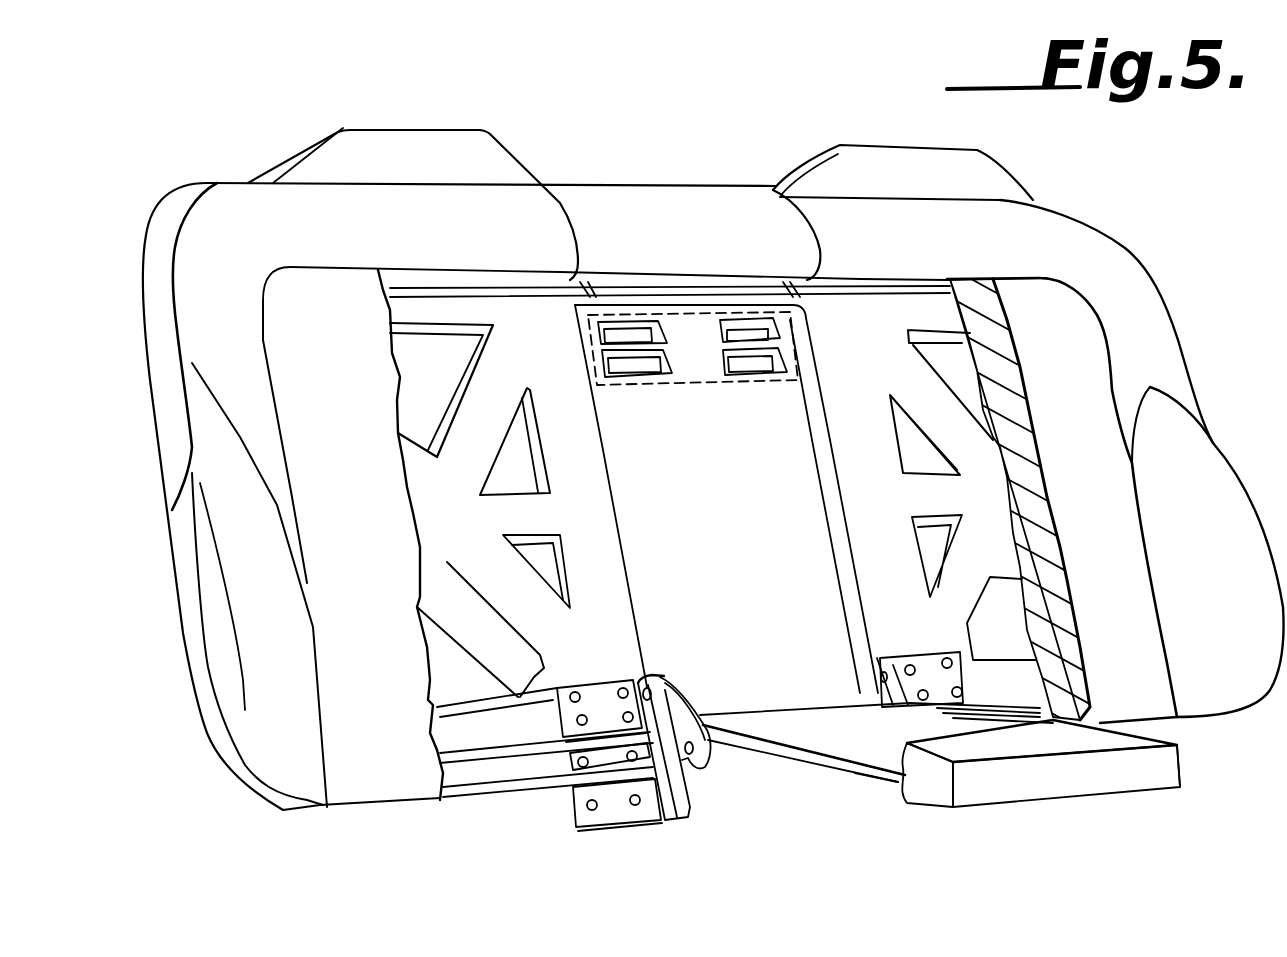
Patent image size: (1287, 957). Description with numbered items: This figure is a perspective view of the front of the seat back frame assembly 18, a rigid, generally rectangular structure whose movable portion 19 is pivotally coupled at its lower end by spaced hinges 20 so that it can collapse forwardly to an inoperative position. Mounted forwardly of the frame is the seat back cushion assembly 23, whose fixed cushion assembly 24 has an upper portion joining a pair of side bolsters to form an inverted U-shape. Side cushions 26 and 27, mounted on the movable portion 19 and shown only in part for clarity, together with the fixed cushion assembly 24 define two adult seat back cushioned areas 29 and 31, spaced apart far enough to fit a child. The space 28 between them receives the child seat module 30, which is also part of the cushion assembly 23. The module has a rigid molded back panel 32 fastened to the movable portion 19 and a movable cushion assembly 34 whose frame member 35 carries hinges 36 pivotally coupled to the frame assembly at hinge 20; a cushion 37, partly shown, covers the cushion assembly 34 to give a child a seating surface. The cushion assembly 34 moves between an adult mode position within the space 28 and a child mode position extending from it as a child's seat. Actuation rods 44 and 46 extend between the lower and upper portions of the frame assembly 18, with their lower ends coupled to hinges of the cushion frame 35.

The seat back frame assembly 18 is at (490, 800).
The movable portion 19 is at (478, 525).
The hinges 20 is at (622, 806).
The seat back cushion assembly 23 is at (1225, 330).
The fixed cushion assembly 24 is at (252, 213).
The side cushion 26 is at (330, 612).
The side cushion 27 is at (1085, 345).
The space 28 is at (737, 207).
The adult seat back cushioned area 29 is at (453, 202).
The child seat module 30 is at (792, 776).
The adult seat back cushioned area 31 is at (997, 210).
The back panel 32 is at (740, 493).
The movable cushion assembly 34 is at (1027, 782).
The frame member 35 is at (874, 773).
The hinges 36 is at (707, 760).
The cushion 37 is at (1160, 780).
The actuation rod 44 is at (787, 282).
The actuation rod 46 is at (592, 280).